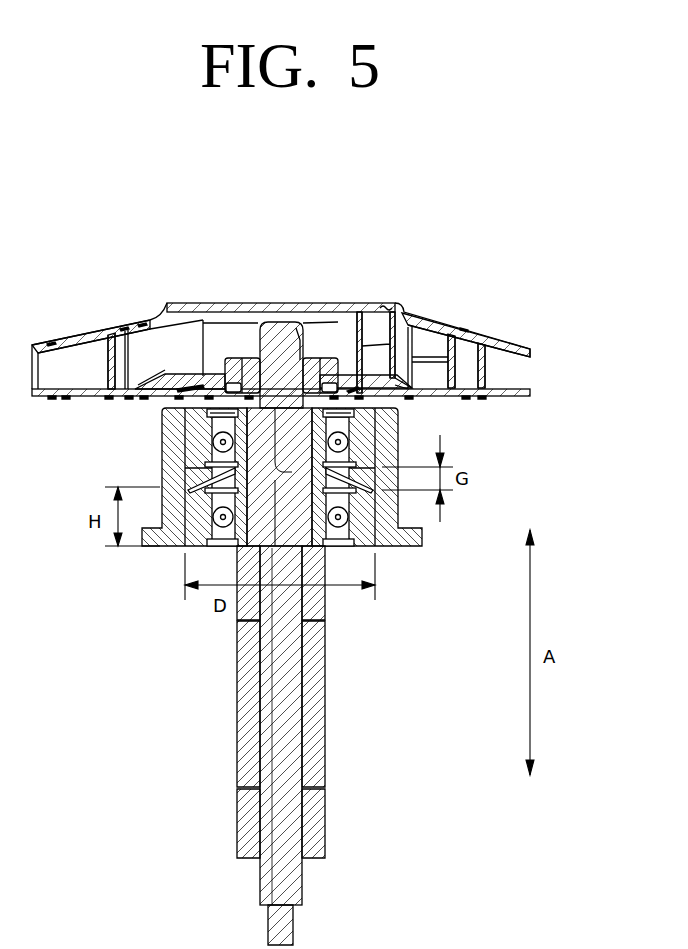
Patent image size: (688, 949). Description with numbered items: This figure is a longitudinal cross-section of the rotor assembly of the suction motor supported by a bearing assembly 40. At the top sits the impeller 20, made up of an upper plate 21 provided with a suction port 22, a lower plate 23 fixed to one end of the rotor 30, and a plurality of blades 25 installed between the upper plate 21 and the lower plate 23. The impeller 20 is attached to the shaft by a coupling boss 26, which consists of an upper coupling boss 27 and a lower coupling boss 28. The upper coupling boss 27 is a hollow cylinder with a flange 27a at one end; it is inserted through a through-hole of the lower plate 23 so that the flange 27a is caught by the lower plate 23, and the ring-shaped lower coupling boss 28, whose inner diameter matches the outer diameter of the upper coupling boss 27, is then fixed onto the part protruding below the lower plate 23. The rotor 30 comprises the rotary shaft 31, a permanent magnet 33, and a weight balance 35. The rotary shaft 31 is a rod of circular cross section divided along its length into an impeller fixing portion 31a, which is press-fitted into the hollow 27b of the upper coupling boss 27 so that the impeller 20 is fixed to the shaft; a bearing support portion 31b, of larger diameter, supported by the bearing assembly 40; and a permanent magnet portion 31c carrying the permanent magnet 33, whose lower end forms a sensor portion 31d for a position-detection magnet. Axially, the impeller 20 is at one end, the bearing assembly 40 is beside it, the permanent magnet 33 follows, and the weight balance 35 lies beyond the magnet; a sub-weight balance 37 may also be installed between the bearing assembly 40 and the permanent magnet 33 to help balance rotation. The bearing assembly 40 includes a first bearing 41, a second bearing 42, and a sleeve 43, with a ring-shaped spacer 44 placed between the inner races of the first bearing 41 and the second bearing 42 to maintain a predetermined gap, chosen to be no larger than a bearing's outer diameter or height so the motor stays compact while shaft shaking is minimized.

The impeller 20 is at (301, 314).
The upper plate 21 is at (505, 340).
The suction port 22 is at (395, 305).
The lower plate 23 is at (527, 393).
The blades 25 is at (67, 357).
The coupling boss 26 is at (256, 289).
The upper coupling boss 27 is at (301, 307).
The flange 27a is at (347, 367).
The hollow 27b is at (305, 367).
The lower coupling boss 28 is at (222, 383).
The rotor 30 is at (260, 600).
The rotary shaft 31 is at (325, 600).
The impeller fixing portion 31a is at (283, 332).
The bearing support portion 31b is at (345, 348).
The permanent magnet portion 31c is at (275, 727).
The sensor portion 31d is at (278, 925).
The permanent magnet 33 is at (322, 698).
The weight balance 35 is at (322, 817).
The sub-weight balance 37 is at (328, 610).
The bearing assembly 40 is at (265, 496).
The first bearing 41 is at (366, 420).
The second bearing 42 is at (360, 507).
The sleeve 43 is at (180, 430).
The spacer 44 is at (360, 477).